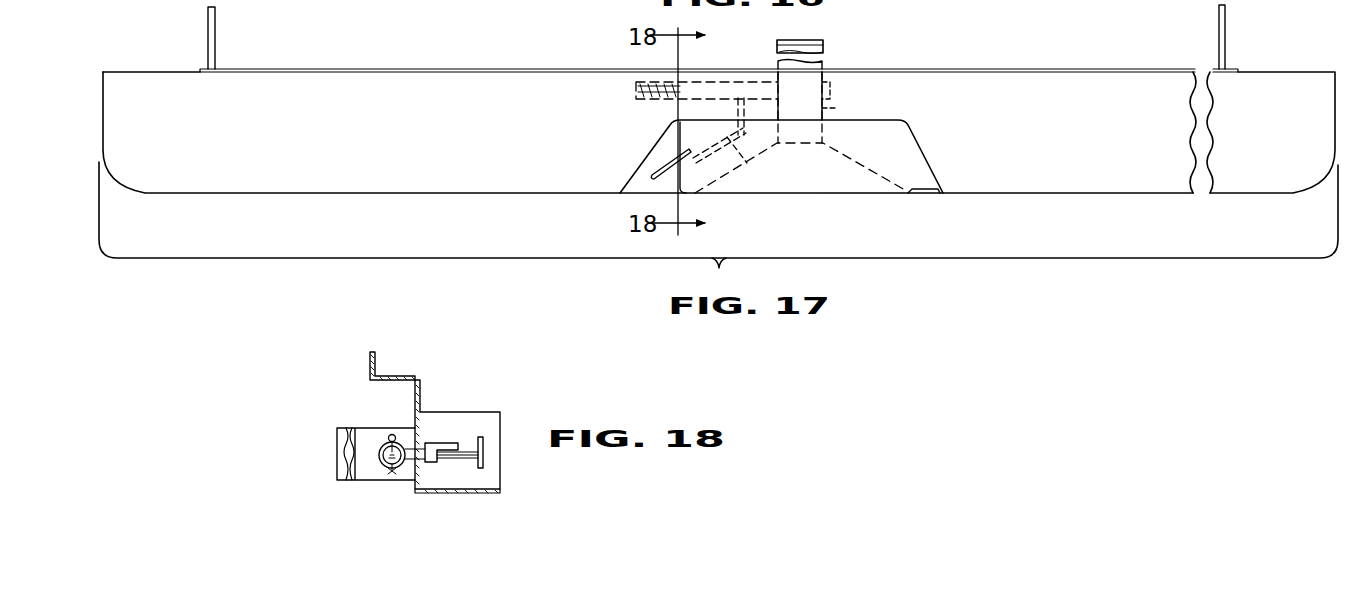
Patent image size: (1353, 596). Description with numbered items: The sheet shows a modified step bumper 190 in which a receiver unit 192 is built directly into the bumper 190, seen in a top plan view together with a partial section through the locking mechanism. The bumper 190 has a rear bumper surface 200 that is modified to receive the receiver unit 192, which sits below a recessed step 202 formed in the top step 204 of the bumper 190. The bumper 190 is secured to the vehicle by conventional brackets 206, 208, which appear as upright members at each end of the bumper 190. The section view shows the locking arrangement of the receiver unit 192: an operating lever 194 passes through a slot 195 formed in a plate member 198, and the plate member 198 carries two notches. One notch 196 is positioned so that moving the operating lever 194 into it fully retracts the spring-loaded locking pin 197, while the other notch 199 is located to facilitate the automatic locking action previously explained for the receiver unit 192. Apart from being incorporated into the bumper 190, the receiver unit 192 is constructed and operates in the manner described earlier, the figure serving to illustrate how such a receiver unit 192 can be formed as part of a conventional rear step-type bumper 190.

In FIG. 17, the modified step bumper 190 is at (905, 48).
In FIG. 17, the receiver unit 192 is at (835, 110).
In FIG. 17, the operating lever 194 is at (761, 165).
In FIG. 18, the slot 195 is at (437, 460).
In FIG. 18, the notch 196 is at (434, 462).
In FIG. 17, the spring-loaded locking pin 197 is at (750, 60).
In FIG. 18, the spring-loaded locking pin 197 is at (385, 463).
In FIG. 17, the plate member 198 is at (660, 158).
In FIG. 18, the plate member 198 is at (490, 470).
In FIG. 18, the notch 199 is at (460, 445).
In FIG. 17, the rear bumper surface 200 is at (1015, 194).
In FIG. 17, the recessed step 202 is at (855, 185).
In FIG. 17, the top step 204 is at (1132, 174).
In FIG. 17, the bracket 206 is at (216, 31).
In FIG. 17, the bracket 208 is at (1219, 22).